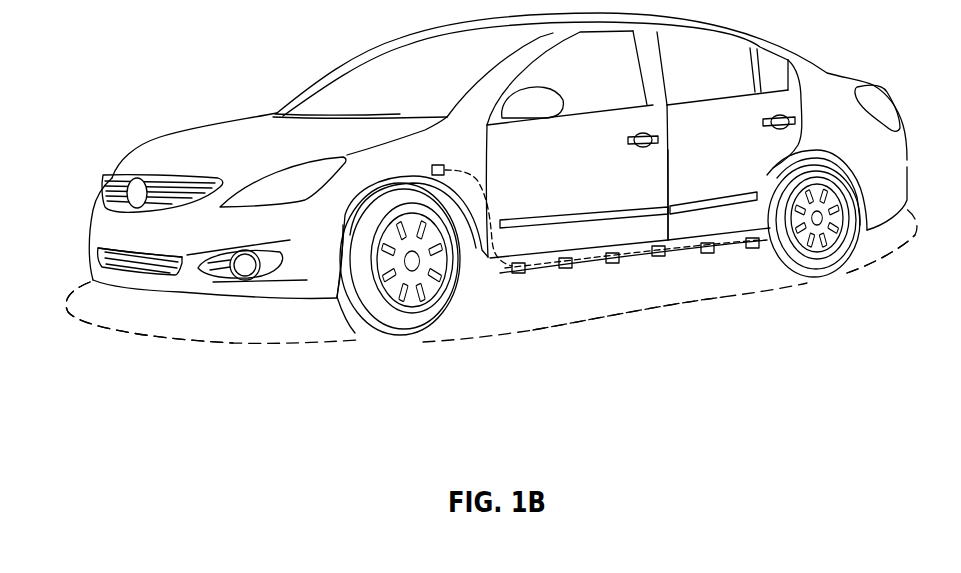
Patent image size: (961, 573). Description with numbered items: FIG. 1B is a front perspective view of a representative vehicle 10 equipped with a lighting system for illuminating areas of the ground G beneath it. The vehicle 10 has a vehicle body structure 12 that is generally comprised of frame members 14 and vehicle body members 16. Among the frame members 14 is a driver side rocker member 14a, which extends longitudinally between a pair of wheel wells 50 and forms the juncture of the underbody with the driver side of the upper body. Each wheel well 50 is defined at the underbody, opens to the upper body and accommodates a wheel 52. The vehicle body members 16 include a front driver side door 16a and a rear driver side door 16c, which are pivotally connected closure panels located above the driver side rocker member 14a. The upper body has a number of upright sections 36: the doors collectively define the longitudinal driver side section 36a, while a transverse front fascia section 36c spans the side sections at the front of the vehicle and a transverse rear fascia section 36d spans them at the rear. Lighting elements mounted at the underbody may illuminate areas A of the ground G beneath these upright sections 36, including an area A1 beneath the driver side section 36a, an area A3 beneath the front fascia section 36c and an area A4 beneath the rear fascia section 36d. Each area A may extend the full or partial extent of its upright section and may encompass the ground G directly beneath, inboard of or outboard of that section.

The vehicle 10 is at (199, 123).
The vehicle body structure 12 is at (622, 275).
The frame members 14 is at (622, 305).
The driver side rocker member 14a is at (488, 268).
The vehicle body members 16 is at (641, 282).
The front driver side door 16a is at (630, 238).
The rear driver side door 16c is at (735, 275).
The upright sections 36 is at (518, 200).
The longitudinal driver side section 36a is at (694, 172).
The transverse front fascia section 36c is at (154, 239).
The transverse rear fascia section 36d is at (933, 164).
The wheel well 50 is at (341, 272).
The wheel 52 is at (360, 317).
The areas A is at (490, 287).
The area beneath the driver side section A1 is at (692, 291).
The area beneath the front fascia section A3 is at (170, 319).
The area beneath the rear fascia section A4 is at (907, 252).
The ground G is at (49, 320).